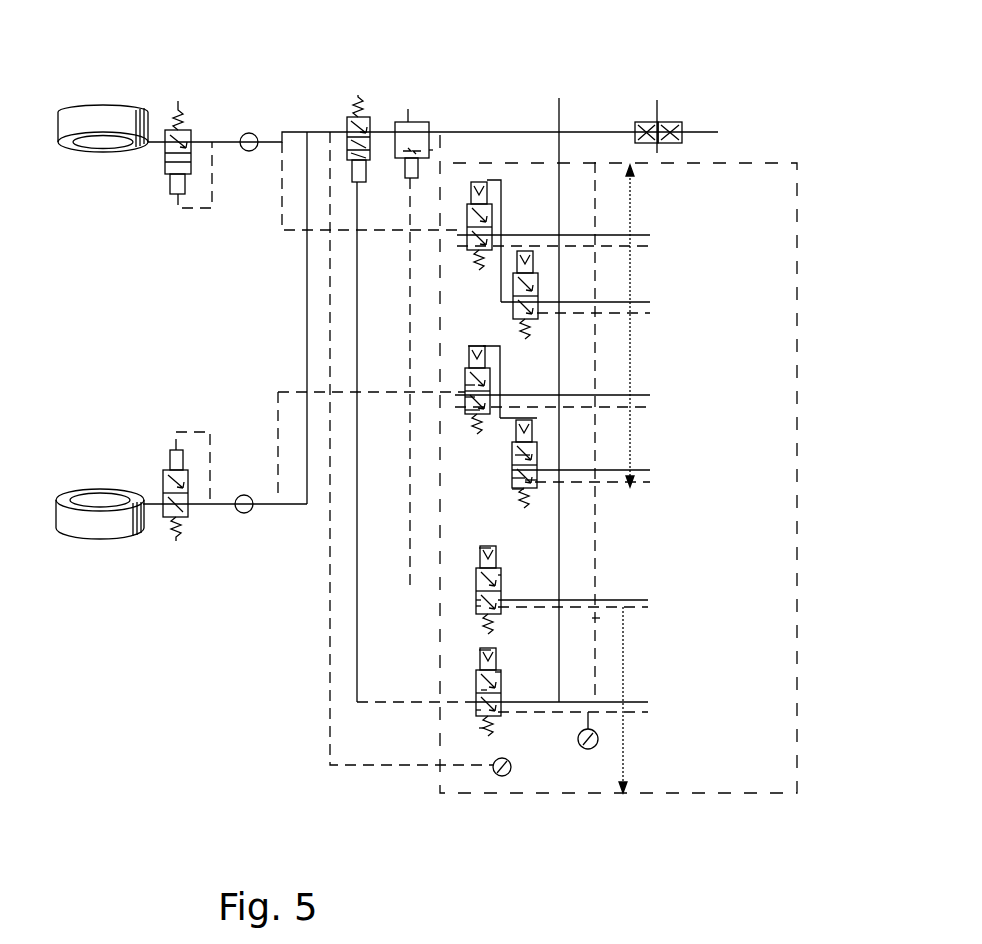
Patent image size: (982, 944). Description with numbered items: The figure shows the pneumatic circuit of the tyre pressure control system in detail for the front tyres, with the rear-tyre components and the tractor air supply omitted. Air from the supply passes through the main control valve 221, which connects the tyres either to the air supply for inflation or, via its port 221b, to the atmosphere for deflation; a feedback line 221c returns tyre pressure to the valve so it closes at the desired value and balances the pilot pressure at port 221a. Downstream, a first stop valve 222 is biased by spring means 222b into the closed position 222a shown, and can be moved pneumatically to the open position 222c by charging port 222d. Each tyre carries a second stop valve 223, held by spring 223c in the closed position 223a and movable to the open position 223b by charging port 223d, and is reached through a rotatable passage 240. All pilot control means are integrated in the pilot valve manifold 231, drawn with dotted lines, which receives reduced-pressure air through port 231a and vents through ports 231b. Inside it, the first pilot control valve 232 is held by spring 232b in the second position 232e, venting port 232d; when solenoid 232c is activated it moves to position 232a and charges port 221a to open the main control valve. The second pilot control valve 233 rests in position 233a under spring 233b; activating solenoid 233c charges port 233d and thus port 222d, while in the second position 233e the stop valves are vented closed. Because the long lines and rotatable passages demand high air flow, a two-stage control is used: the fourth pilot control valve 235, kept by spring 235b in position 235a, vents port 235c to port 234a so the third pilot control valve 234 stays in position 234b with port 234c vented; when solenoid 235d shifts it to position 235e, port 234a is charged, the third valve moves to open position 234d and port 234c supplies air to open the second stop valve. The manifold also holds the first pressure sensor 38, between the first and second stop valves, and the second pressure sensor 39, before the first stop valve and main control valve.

The first pressure sensor 38 is at (509, 775).
The second pressure sensor 39 is at (598, 735).
The main control valve 221 is at (414, 128).
The port 221a is at (416, 174).
The port 221b is at (431, 152).
The line 221c is at (408, 109).
The first stop valve 222 is at (348, 125).
The closed position 222a is at (368, 115).
The spring means 222b is at (360, 98).
The open position 222c is at (371, 158).
The port 222d is at (356, 180).
The second stop valve 223 is at (165, 158).
The closed position 223a is at (190, 513).
The open position 223b is at (188, 480).
The spring 223c is at (176, 540).
The port 223d is at (172, 452).
The pilot valve manifold 231 is at (800, 196).
The port 231a is at (562, 160).
The ports 231b is at (633, 198).
The first pilot control valve 232 is at (477, 582).
The position 232a is at (501, 578).
The spring 232b is at (598, 620).
The solenoid 232c is at (492, 548).
The port 232d is at (492, 603).
The second position 232e is at (478, 605).
The second pilot control valve 233 is at (501, 686).
The position 233a is at (496, 673).
The spring 233b is at (479, 728).
The solenoid 233c is at (492, 650).
The port 233d is at (478, 710).
The second position 233e is at (485, 690).
The third pilot control valve 234 is at (491, 210).
The port 234a is at (473, 352).
The position 234b is at (465, 408).
The port 234c is at (465, 397).
The open position 234d is at (465, 385).
The fourth pilot control valve 235 is at (538, 283).
The position 235a is at (535, 482).
The spring 235b is at (512, 500).
The port 235c is at (512, 474).
The solenoid 235d is at (537, 420).
The position 235e is at (521, 454).
The rotatable passage 240 is at (254, 133).